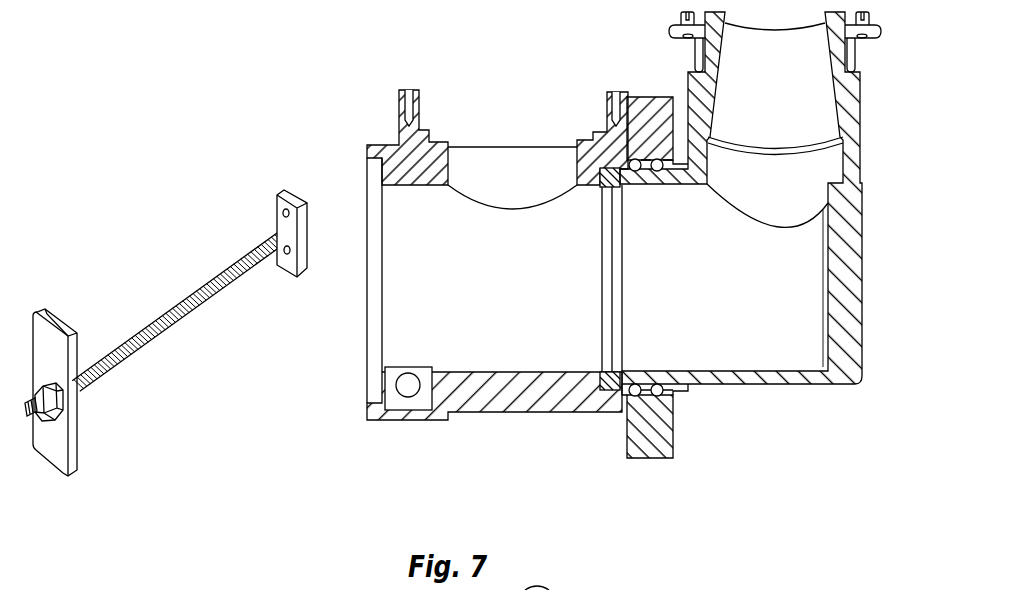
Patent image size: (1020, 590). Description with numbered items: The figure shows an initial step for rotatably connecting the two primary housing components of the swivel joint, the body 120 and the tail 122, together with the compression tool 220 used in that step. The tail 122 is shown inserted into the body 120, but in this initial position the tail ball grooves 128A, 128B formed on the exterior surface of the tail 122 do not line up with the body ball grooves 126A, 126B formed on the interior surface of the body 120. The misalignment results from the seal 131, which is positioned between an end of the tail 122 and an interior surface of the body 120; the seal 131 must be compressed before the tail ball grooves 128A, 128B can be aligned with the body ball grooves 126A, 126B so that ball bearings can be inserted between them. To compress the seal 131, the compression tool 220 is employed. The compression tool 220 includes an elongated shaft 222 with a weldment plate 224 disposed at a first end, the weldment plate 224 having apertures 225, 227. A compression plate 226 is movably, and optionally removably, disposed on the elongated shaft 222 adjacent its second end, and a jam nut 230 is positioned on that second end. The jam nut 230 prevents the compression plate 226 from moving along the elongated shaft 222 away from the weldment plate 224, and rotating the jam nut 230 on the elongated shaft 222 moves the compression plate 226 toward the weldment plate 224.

The body 120 is at (470, 412).
The tail 122 is at (788, 383).
The body ball groove 126A is at (628, 395).
The body ball groove 126B is at (627, 458).
The tail ball groove 128A is at (632, 405).
The tail ball groove 128B is at (655, 394).
The seal 131 is at (612, 168).
The compression tool 220 is at (152, 122).
The elongated shaft 222 is at (220, 268).
The weldment plate 224 is at (290, 191).
The aperture 225 is at (282, 211).
The compression plate 226 is at (78, 428).
The aperture 227 is at (287, 254).
The jam nut 230 is at (60, 398).